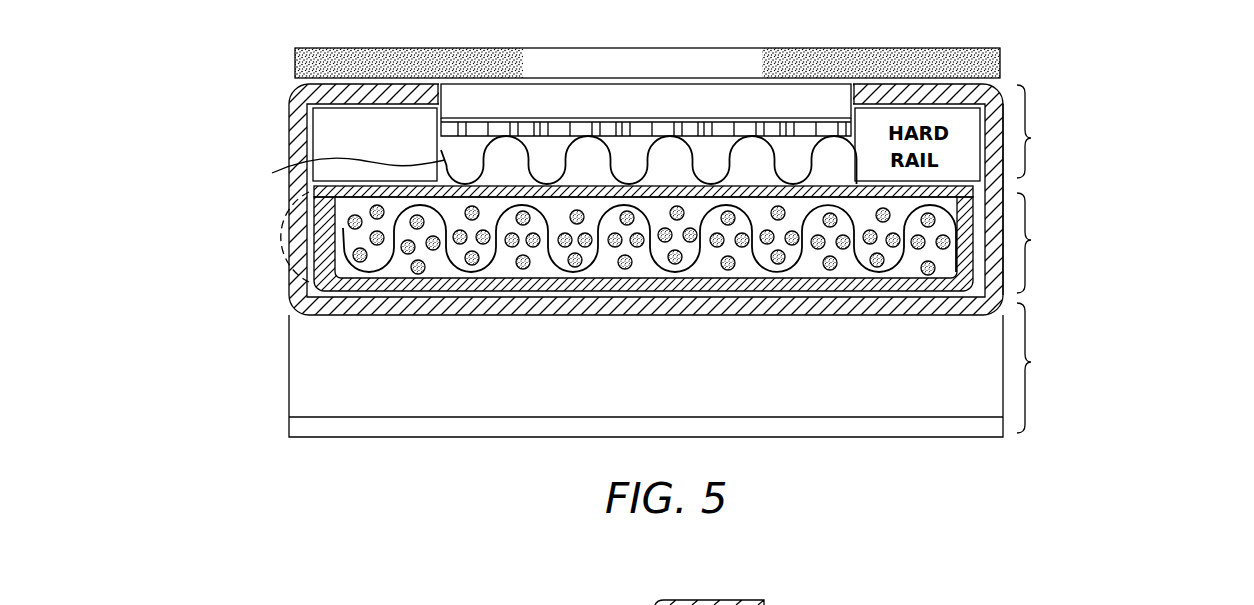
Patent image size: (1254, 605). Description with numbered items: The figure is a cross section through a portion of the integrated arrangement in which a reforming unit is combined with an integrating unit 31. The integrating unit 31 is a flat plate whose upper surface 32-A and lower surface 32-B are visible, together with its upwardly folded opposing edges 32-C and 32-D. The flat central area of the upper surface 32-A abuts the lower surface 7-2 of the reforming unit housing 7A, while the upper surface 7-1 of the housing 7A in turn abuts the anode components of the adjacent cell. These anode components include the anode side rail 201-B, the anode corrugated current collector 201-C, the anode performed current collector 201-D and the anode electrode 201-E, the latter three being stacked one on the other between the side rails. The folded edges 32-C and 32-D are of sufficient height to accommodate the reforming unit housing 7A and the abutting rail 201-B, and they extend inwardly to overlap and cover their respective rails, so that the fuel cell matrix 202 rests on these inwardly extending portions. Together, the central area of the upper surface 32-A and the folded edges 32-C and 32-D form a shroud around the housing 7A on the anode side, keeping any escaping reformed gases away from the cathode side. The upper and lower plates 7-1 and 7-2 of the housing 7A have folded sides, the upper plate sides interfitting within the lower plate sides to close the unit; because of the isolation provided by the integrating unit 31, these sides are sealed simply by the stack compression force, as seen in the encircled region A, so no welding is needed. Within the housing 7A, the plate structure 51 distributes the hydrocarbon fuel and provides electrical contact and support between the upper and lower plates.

The fuel cell matrix 202 is at (890, 55).
The anode electrode 201-E is at (762, 92).
The anode performed current collector 201-D is at (480, 128).
The anode side rail 201-B is at (347, 125).
The anode corrugated current collector 201-C is at (315, 173).
The upper surface 7-1 is at (553, 186).
The lower surface 7-2 is at (600, 280).
The reforming unit housing 7A is at (433, 258).
The plate structure 51 is at (547, 268).
The upper surface 32-A is at (832, 297).
The lower surface 32-B is at (691, 314).
The upwardly folded edge 32-C is at (300, 192).
The upwardly folded edge 32-D is at (998, 194).
The integrating unit 31 is at (1005, 290).
The encircled region A is at (350, 290).